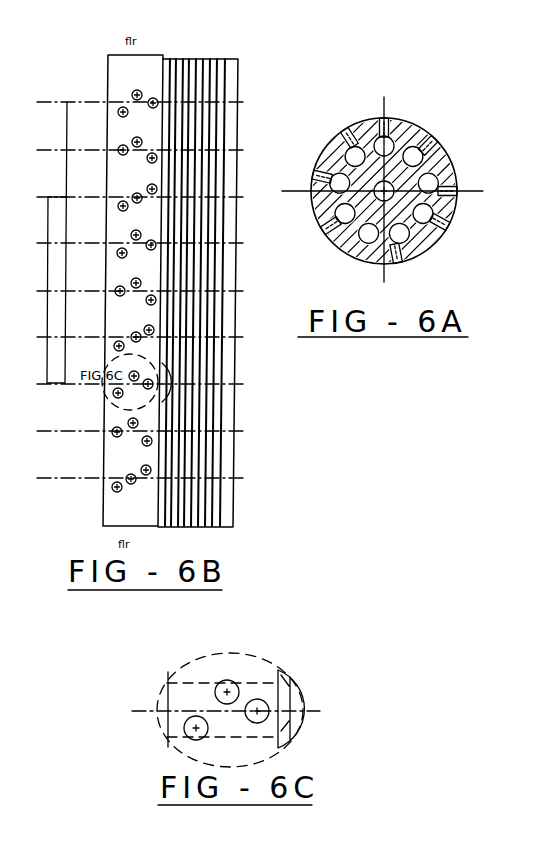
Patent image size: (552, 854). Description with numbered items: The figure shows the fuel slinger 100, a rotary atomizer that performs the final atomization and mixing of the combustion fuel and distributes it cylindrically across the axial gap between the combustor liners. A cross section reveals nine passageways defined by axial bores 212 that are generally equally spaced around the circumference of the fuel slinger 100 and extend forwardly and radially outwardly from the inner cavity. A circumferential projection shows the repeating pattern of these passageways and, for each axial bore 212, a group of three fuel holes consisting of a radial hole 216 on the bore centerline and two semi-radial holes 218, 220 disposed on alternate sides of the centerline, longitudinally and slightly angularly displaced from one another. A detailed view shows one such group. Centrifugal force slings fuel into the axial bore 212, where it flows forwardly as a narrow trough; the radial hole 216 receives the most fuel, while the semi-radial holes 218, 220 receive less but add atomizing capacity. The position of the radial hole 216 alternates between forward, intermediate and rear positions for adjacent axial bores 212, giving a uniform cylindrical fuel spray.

In FIG. 6A, the fuel slinger 100 is at (423, 260).
In FIG. 6B, the fuel slinger 100 is at (151, 83).
In FIG. 6A, the axial bore 212 is at (405, 150).
In FIG. 6C, the axial bore 212 is at (184, 728).
In FIG. 6A, the radial hole 216 is at (387, 115).
In FIG. 6B, the radial hole 216 is at (154, 380).
In FIG. 6C, the radial hole 216 is at (256, 724).
In FIG. 6A, the semi-radial hole 218 is at (437, 140).
In FIG. 6B, the semi-radial hole 218 is at (112, 393).
In FIG. 6C, the semi-radial hole 218 is at (184, 724).
In FIG. 6A, the semi-radial hole 220 is at (458, 182).
In FIG. 6B, the semi-radial hole 220 is at (114, 346).
In FIG. 6C, the semi-radial hole 220 is at (237, 683).